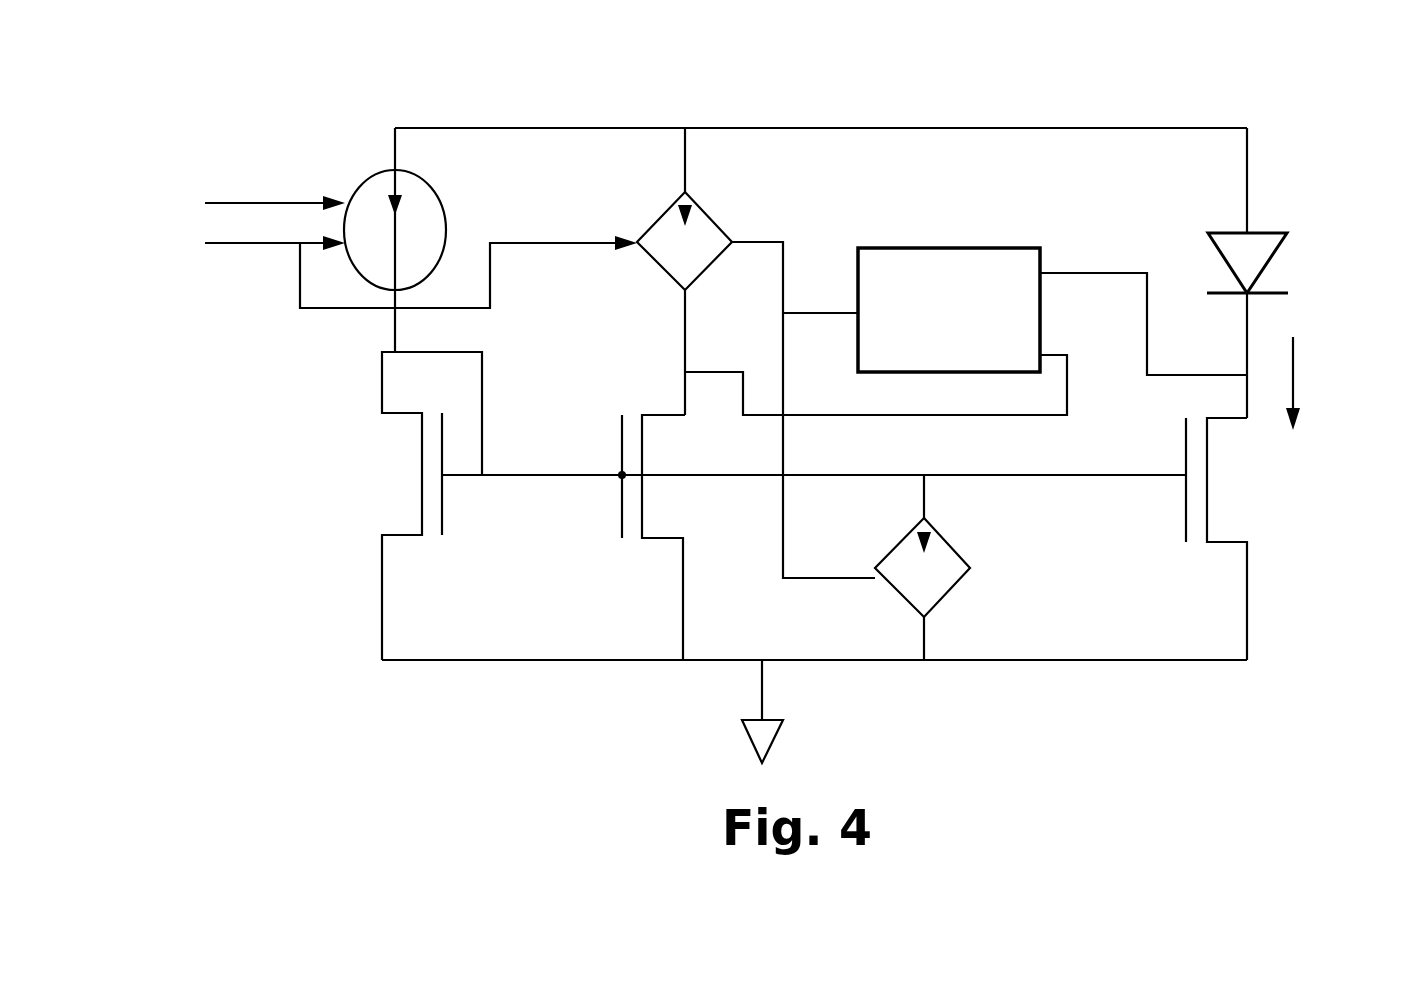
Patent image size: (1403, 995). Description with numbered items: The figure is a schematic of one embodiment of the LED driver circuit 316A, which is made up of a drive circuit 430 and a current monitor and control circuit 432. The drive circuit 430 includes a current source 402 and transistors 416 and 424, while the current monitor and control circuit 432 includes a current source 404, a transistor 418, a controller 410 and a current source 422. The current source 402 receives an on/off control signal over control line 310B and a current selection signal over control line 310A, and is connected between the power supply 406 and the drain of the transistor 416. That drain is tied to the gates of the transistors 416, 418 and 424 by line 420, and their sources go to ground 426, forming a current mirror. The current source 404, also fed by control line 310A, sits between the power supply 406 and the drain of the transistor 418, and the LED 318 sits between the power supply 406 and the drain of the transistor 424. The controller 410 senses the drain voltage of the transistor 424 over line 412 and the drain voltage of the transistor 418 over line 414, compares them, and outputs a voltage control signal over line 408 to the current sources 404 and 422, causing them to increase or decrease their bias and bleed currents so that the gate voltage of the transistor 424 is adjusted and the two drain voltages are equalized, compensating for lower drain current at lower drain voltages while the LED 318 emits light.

The LED driver circuit 316A is at (433, 86).
The control line 310A is at (225, 243).
The control line 310B is at (232, 203).
The current source 402 is at (372, 172).
The current source 404 is at (656, 220).
The power supply 406 is at (998, 128).
The line 408 is at (818, 316).
The controller 410 is at (980, 248).
The line 412 is at (1133, 272).
The line 414 is at (1052, 355).
The transistor 416 is at (421, 428).
The transistor 418 is at (645, 503).
The line 420 is at (988, 475).
The current source 422 is at (950, 546).
The transistor 424 is at (1207, 447).
The ground 426 is at (1203, 662).
The drive circuit 430 is at (338, 570).
The current monitor and control circuit 432 is at (820, 178).
The LED 318 is at (1265, 232).